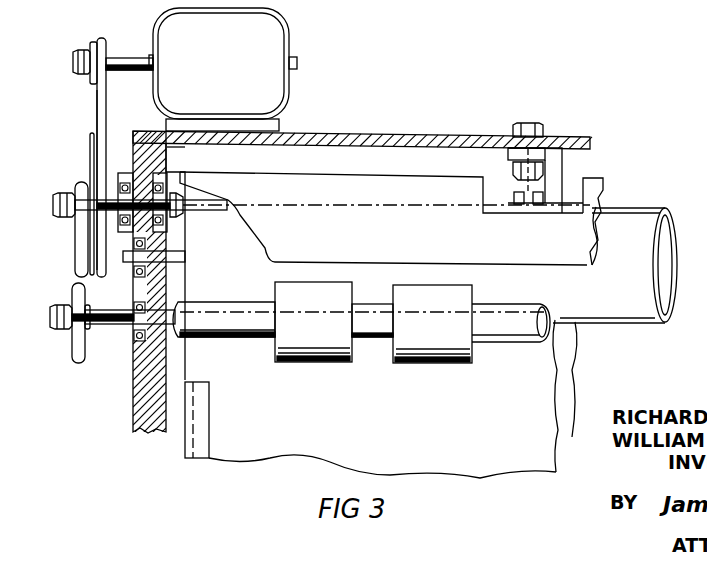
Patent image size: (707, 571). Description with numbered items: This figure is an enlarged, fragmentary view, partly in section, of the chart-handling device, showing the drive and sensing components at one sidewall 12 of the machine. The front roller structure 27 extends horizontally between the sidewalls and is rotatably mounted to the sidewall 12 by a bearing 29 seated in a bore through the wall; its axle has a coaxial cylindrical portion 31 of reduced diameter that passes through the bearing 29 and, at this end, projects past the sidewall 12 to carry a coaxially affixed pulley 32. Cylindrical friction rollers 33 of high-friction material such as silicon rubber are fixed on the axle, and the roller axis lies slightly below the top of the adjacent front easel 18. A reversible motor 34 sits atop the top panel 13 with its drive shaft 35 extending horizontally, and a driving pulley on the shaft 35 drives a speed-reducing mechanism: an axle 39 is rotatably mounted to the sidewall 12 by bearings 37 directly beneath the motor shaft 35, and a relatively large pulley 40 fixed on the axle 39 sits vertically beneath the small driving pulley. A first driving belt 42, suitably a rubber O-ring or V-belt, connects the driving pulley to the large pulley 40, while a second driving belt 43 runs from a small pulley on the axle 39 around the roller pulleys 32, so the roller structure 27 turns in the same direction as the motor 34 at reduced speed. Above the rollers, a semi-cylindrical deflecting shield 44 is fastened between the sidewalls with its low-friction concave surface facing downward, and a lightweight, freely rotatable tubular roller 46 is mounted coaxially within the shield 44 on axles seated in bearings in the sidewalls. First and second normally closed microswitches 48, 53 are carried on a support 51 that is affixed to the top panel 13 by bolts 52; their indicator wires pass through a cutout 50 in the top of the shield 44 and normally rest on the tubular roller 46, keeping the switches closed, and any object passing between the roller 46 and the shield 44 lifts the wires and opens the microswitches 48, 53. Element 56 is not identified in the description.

The sidewall 12 is at (131, 414).
The top panel 13 is at (591, 137).
The front easel 18 is at (180, 455).
The front roller structure 27 is at (286, 366).
The bearing 29 is at (130, 331).
The cylindrical portion 31 is at (57, 307).
The pulley 32 is at (76, 358).
The friction roller 33 is at (331, 363).
The reversible motor 34 is at (291, 41).
The drive shaft 35 is at (125, 58).
The bearings 37 is at (169, 188).
The axle 39 is at (107, 195).
The large pulley 40 is at (89, 144).
The first driving belt 42 is at (96, 110).
The second driving belt 43 is at (75, 241).
The deflecting shield 44 is at (309, 175).
The tubular roller 46 is at (632, 324).
The first microswitch 48 is at (519, 204).
The cutout 50 is at (575, 178).
The support 51 is at (508, 153).
The bolts 52 is at (528, 124).
The second microswitch 53 is at (539, 204).
The pulley 56 is at (104, 38).